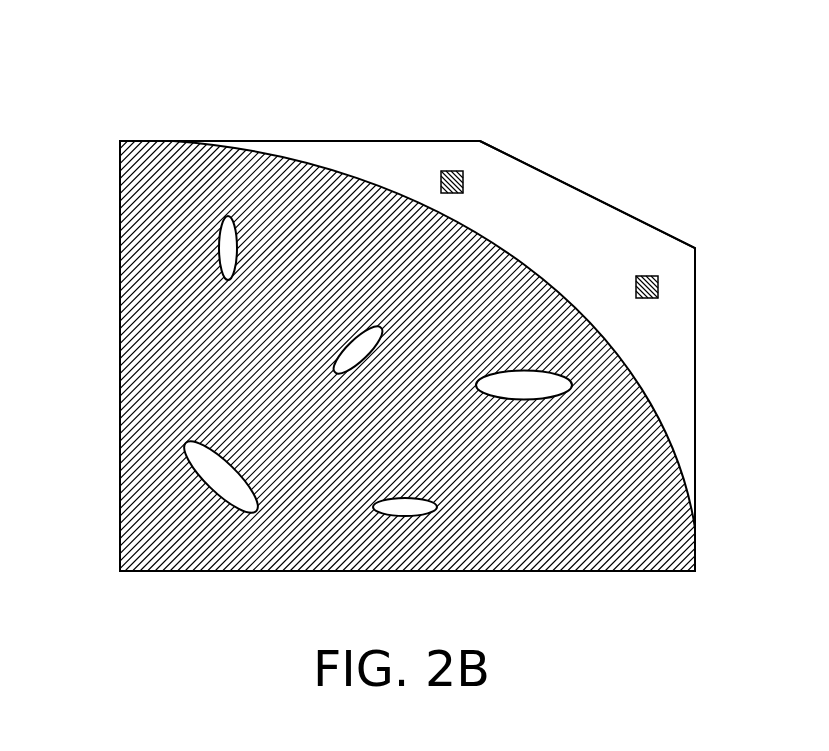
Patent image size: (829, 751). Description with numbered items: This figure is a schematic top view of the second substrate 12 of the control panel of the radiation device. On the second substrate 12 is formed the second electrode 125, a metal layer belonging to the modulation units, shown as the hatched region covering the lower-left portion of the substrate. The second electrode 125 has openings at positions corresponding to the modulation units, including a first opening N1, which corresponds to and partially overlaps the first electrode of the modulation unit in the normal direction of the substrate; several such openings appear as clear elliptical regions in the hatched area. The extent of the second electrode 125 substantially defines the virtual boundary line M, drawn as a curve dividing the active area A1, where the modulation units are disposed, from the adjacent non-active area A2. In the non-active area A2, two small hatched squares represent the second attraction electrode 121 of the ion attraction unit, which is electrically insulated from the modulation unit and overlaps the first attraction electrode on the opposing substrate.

The second substrate 12 is at (52, 47).
The second electrode 125 is at (165, 163).
The second attraction electrode 121 is at (457, 173).
The first opening N1 is at (212, 243).
The virtual boundary line M is at (652, 408).
The active area A1 is at (630, 563).
The non-active area A2 is at (673, 345).